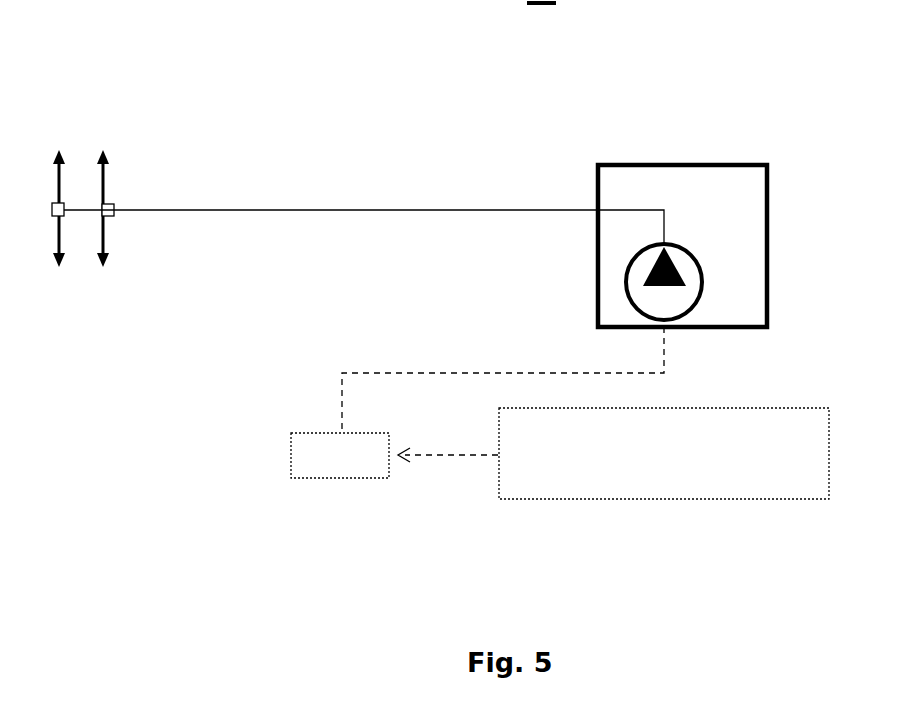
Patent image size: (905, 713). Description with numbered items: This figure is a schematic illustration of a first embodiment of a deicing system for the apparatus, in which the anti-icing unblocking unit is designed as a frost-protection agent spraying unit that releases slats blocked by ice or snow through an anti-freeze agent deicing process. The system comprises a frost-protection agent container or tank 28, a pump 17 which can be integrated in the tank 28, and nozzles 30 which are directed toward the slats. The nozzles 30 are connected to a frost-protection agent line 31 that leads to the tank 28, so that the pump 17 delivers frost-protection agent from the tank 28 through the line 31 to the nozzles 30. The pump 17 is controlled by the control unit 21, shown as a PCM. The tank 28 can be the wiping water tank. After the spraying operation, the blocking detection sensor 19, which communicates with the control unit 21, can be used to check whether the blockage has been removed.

The pump 17 is at (638, 282).
The blocking detection sensor 19 is at (658, 472).
The control unit 21 is at (357, 450).
The frost-protection agent tank 28 is at (713, 173).
The nozzles 30 is at (115, 210).
The frost-protection agent line 31 is at (324, 215).